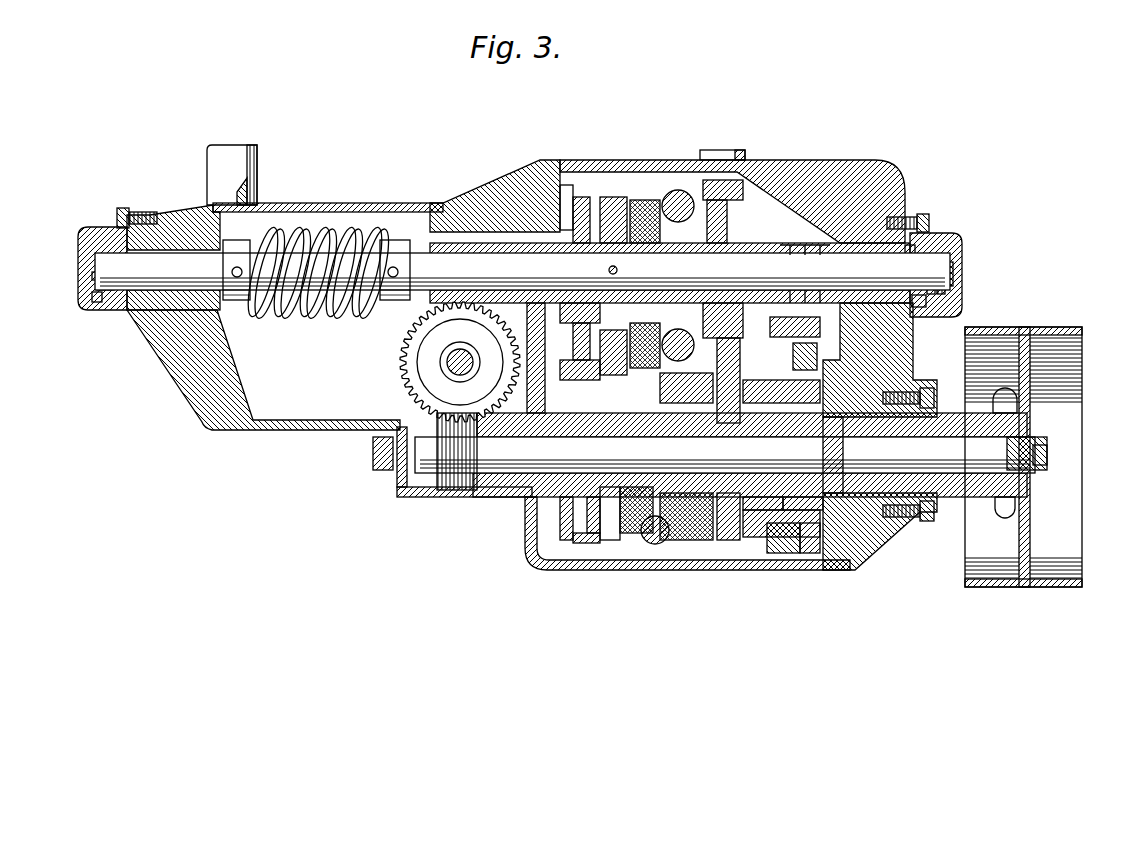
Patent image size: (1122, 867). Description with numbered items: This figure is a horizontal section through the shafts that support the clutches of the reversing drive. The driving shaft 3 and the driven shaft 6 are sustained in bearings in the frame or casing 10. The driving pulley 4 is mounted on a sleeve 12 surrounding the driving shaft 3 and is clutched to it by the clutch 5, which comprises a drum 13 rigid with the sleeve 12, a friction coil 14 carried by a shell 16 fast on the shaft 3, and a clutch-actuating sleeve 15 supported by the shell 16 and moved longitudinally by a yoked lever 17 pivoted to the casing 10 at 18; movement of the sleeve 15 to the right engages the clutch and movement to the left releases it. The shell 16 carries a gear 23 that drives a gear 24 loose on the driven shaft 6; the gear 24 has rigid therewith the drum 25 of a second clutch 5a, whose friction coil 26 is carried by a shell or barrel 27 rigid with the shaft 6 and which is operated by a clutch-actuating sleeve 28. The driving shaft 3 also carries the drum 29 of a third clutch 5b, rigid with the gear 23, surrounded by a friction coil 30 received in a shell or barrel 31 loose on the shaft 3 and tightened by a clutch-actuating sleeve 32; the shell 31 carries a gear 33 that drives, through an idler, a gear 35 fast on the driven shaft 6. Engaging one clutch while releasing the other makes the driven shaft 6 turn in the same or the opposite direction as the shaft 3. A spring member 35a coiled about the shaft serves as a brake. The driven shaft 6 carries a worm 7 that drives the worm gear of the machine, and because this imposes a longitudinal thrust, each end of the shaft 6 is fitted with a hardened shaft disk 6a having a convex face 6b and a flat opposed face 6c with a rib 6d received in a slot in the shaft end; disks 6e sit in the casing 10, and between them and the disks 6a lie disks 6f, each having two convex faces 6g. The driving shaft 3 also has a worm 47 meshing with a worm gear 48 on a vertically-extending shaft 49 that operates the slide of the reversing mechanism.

The driving shaft 3 is at (918, 513).
The driving pulley 4 is at (1038, 590).
The clutch 5 is at (825, 567).
The clutch 5a is at (565, 190).
The clutch 5b is at (563, 553).
The driven shaft 6 is at (795, 265).
The shaft disks 6a is at (935, 195).
The convex face 6b is at (965, 222).
The flat opposed face 6c is at (935, 280).
The rib 6d is at (920, 268).
The disks 6e is at (125, 262).
The disks 6f is at (110, 245).
The convex faces 6g is at (993, 298).
The worm 7 is at (330, 250).
The frame or casing 10 is at (905, 380).
The sleeve 12 is at (957, 500).
The drum 13 is at (783, 570).
The friction coil 14 is at (753, 570).
The clutch-actuating sleeve 15 is at (820, 570).
The shell 16 is at (733, 570).
The yoked lever 17 is at (803, 363).
The pivot 18 is at (810, 343).
The gear 23 is at (713, 570).
The gear 24 is at (750, 165).
The drum 25 is at (675, 200).
The friction coil 26 is at (705, 178).
The shell or barrel 27 is at (640, 205).
The clutch-actuating sleeve 28 is at (600, 200).
The drum 29 is at (643, 570).
The friction coil 30 is at (673, 570).
The shell or barrel 31 is at (590, 570).
The clutch-actuating sleeve 32 is at (620, 570).
The gear 33 is at (563, 523).
The gear 35 is at (575, 200).
The spring member 35a is at (805, 262).
The worm 47 is at (443, 483).
The worm gear 48 is at (395, 450).
The vertically-extending shaft 49 is at (445, 367).